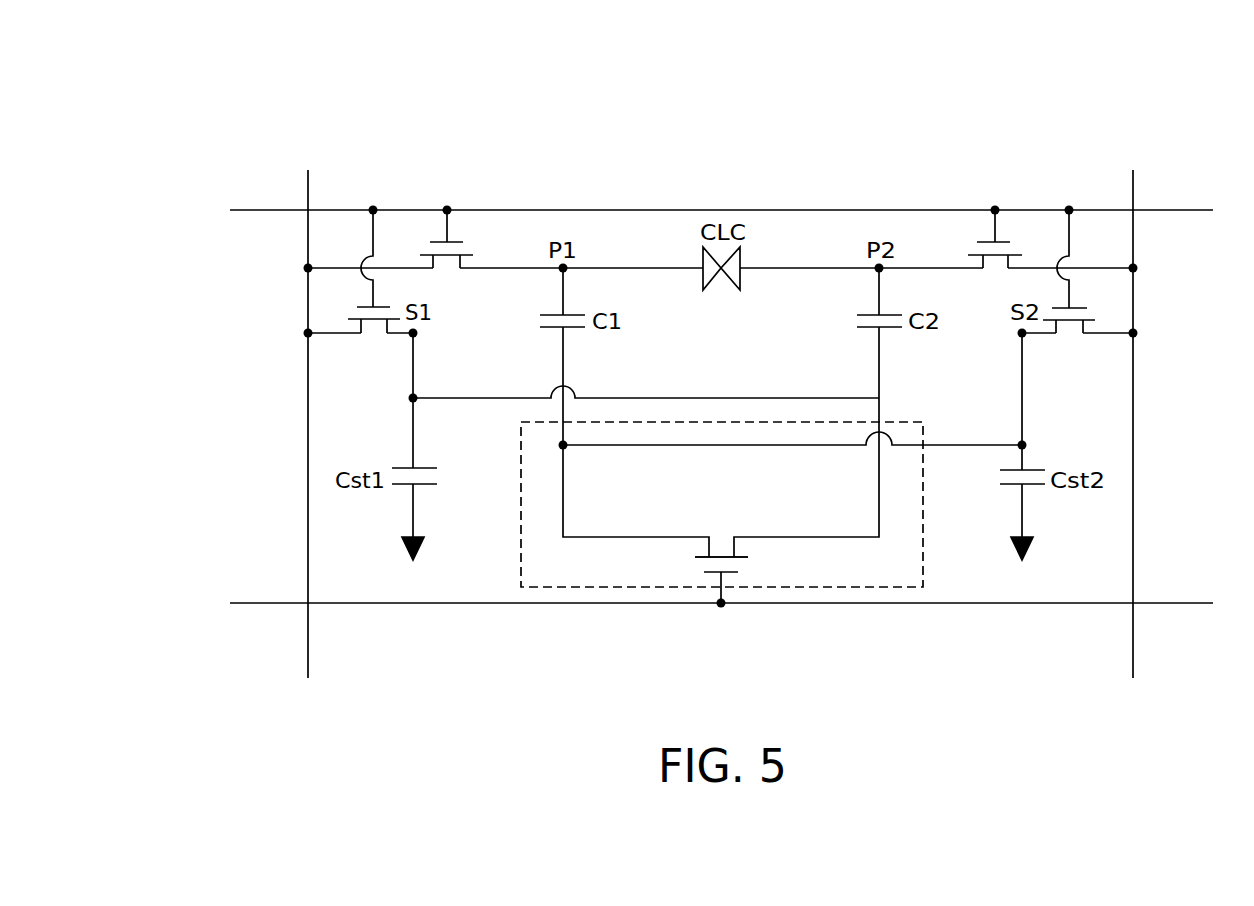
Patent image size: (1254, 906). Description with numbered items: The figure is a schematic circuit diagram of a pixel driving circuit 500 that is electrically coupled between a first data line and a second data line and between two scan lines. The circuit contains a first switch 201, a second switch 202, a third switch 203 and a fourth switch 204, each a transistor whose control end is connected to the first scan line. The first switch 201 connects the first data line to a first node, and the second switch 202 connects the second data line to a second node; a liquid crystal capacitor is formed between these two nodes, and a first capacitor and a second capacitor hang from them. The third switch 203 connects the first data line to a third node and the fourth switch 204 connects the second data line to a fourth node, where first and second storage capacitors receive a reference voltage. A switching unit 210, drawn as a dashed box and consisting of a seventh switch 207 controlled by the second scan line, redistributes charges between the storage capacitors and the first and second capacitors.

The pixel driving circuit 500 is at (250, 62).
The first switch 201 is at (472, 247).
The second switch 202 is at (1020, 247).
The third switch 203 is at (352, 313).
The fourth switch 204 is at (1092, 313).
The seventh switch 207 is at (700, 566).
The switching unit 210 is at (579, 588).